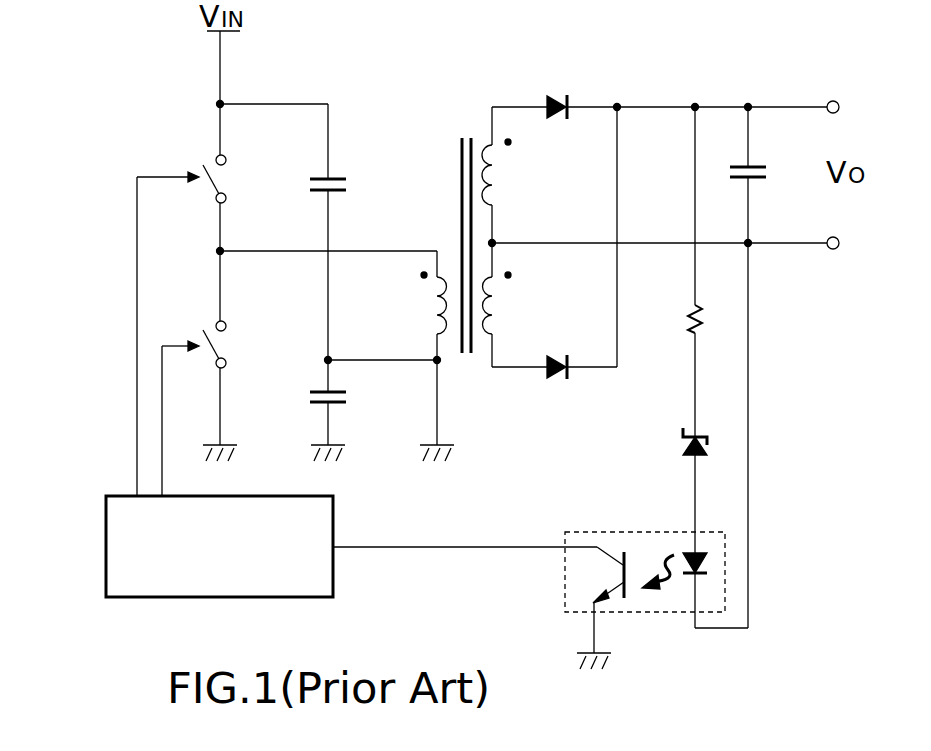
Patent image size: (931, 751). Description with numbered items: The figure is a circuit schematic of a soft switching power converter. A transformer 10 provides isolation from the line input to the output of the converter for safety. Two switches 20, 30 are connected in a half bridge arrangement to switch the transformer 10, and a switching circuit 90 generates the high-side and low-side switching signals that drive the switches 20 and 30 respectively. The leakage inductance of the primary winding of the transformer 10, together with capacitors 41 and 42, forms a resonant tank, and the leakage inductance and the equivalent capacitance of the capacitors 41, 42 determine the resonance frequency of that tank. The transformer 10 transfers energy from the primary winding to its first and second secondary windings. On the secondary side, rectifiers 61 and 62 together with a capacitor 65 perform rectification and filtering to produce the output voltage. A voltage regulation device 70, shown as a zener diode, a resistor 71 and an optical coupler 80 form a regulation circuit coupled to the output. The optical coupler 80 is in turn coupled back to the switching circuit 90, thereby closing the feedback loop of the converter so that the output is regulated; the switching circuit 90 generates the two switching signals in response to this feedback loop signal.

The transformer 10 is at (463, 132).
The switch 20 is at (233, 177).
The switch 30 is at (230, 340).
The capacitor 41 is at (350, 183).
The capacitor 42 is at (350, 396).
The rectifier 61 is at (557, 93).
The rectifier 62 is at (557, 386).
The capacitor 65 is at (767, 172).
The voltage regulation device 70 is at (682, 443).
The resistor 71 is at (688, 314).
The optical coupler 80 is at (562, 563).
The switching circuit 90 is at (97, 542).